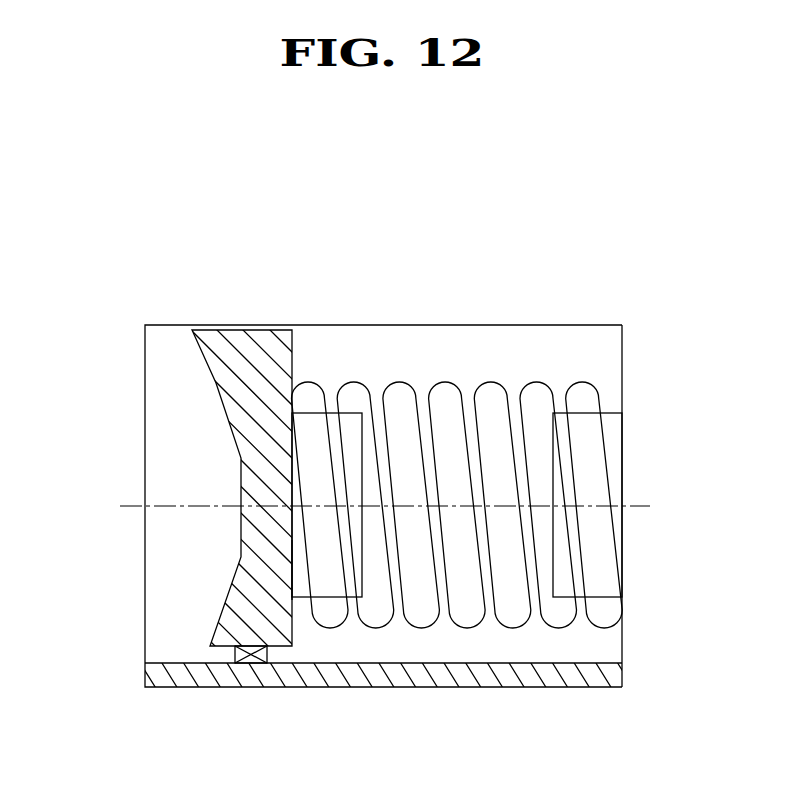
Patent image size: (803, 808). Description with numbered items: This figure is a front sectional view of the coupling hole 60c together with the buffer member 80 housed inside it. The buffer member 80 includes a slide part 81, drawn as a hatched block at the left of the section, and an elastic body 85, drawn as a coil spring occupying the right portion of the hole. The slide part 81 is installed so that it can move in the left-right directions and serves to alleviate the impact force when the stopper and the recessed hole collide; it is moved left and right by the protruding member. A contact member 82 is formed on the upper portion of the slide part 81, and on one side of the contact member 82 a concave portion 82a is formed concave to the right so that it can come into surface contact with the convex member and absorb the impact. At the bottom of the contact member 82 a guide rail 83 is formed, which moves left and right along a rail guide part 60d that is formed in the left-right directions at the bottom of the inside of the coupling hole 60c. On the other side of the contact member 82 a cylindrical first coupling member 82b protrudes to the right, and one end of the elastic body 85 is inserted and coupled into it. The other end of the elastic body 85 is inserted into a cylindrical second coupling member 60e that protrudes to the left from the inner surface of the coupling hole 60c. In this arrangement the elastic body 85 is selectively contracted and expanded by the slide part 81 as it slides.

The buffer member 80 is at (311, 506).
The slide part 81 is at (262, 330).
The contact member 82 is at (384, 325).
The concave portion 82a is at (233, 437).
The first coupling member 82b is at (300, 553).
The guide rail 83 is at (248, 663).
The elastic body 85 is at (614, 612).
The coupling hole 60c is at (600, 325).
The rail guide part 60d is at (491, 675).
The second coupling member 60e is at (614, 448).